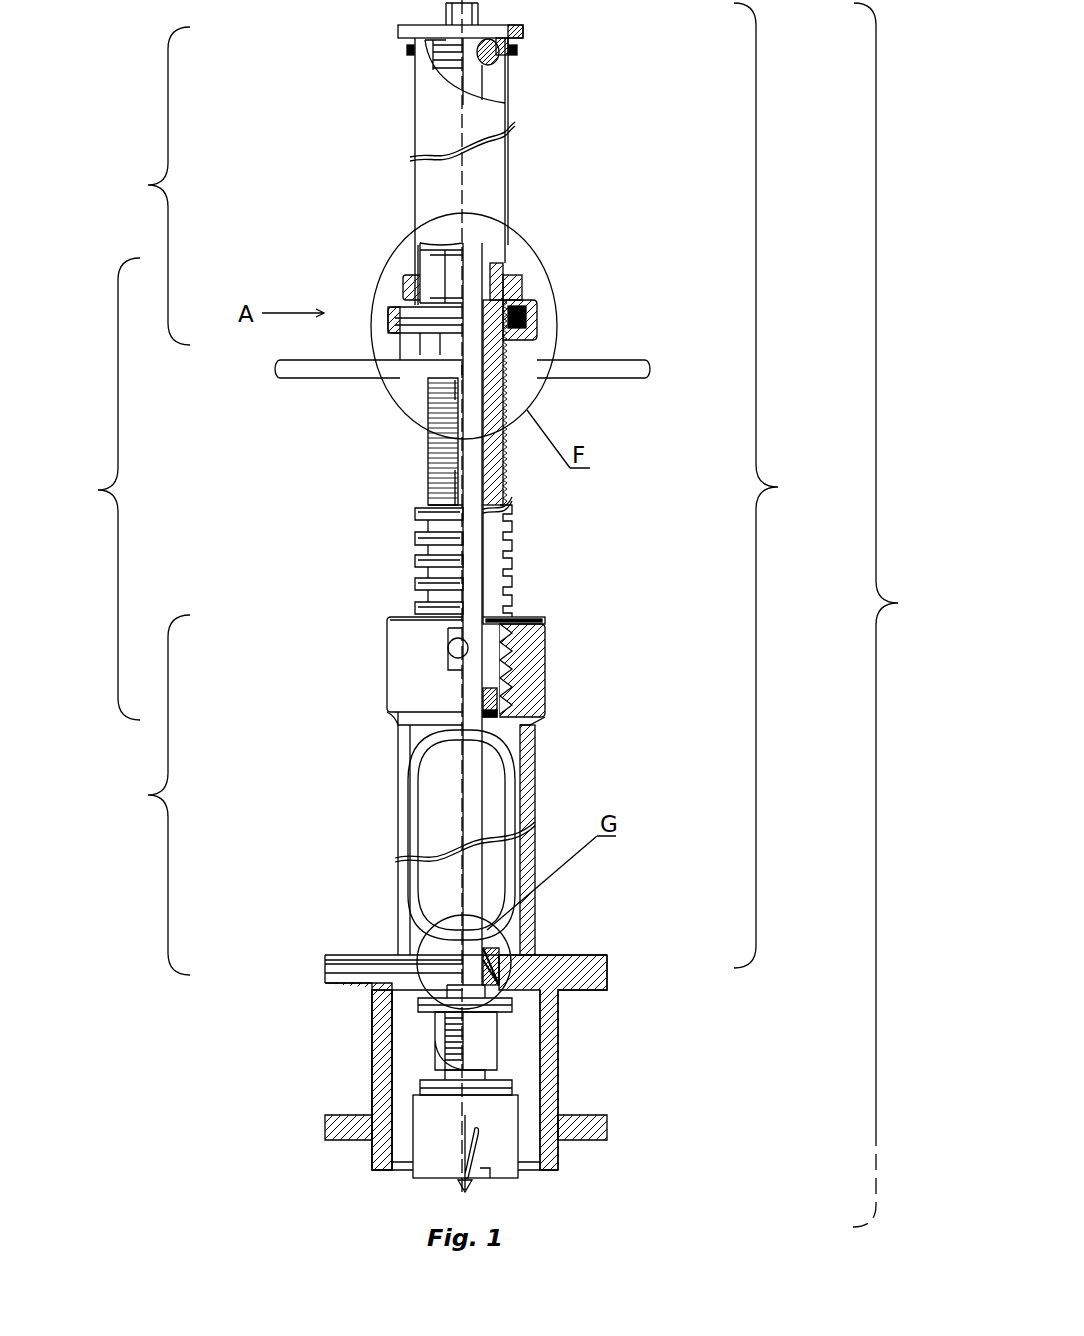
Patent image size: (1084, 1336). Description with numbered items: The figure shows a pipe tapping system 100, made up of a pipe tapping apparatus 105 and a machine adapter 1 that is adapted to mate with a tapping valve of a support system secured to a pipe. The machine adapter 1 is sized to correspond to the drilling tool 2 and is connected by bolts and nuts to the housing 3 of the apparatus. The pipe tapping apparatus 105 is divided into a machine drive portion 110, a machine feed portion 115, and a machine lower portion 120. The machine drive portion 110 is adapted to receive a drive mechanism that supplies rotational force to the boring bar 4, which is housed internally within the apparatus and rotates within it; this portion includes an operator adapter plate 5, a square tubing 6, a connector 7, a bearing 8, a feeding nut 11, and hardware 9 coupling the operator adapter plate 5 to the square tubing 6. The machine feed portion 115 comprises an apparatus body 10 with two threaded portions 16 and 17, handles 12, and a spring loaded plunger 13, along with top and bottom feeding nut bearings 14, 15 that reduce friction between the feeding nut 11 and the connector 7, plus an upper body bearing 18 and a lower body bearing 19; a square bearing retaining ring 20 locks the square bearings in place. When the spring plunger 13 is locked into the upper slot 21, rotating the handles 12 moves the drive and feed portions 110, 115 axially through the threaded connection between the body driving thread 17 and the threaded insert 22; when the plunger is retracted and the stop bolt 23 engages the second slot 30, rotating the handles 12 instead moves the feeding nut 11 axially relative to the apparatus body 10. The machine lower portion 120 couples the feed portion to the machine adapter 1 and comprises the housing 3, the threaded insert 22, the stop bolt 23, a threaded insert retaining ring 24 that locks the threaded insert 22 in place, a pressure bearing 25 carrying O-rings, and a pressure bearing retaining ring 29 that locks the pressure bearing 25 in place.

The machine adapter 1 is at (382, 1050).
The drilling tool 2 is at (425, 1123).
The housing 3 is at (415, 930).
The boring bar 4 is at (457, 80).
The operator adapter plate 5 is at (523, 30).
The square tubing 6 is at (497, 167).
The connector 7 is at (413, 282).
The bearing 8 is at (497, 60).
The hardware 9 is at (405, 50).
The apparatus body 10 is at (500, 543).
The feeding nut 11 is at (412, 318).
The handles 12 is at (320, 372).
The spring loaded plunger 13 is at (430, 385).
The top feeding nut bearing 14 is at (528, 300).
The bottom feeding nut bearing 15 is at (537, 325).
The threaded portion 16 is at (420, 502).
The body driving thread 17 is at (407, 576).
The upper body bearing 18 is at (490, 262).
The lower body bearing 19 is at (497, 702).
The square bearing retaining ring 20 is at (433, 262).
The upper slot 21 is at (428, 440).
The threaded insert 22 is at (523, 667).
The stop bolt 23 is at (450, 650).
The threaded insert retaining ring 24 is at (543, 617).
The pressure bearing 25 is at (493, 970).
The pressure bearing retaining ring 29 is at (490, 953).
The second slot 30 is at (445, 595).
The pipe tapping system 100 is at (900, 615).
The pipe tapping apparatus 105 is at (781, 485).
The machine drive portion 110 is at (142, 186).
The machine feed portion 115 is at (92, 489).
The machine lower portion 120 is at (142, 795).